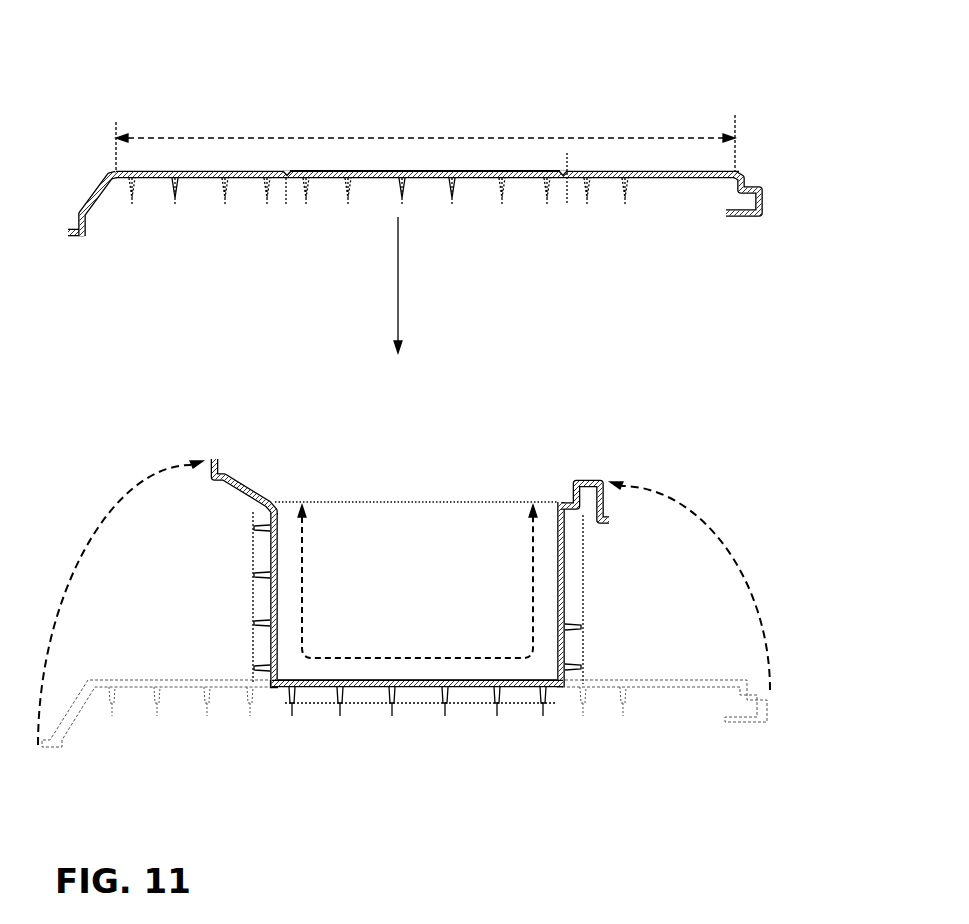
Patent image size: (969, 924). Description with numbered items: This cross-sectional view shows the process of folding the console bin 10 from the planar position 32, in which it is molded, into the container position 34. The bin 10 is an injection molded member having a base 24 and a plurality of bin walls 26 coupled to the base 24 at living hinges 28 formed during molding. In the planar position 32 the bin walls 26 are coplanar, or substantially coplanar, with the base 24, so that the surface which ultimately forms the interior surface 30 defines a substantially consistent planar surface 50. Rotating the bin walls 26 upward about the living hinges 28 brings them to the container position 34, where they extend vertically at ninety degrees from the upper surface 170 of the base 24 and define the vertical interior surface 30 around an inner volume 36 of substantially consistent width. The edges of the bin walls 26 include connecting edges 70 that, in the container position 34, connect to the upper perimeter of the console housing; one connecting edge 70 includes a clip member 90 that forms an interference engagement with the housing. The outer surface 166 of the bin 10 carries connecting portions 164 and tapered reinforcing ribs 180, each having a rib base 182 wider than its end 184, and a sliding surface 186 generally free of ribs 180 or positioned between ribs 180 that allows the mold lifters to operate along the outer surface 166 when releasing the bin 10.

The bin 10 is at (268, 466).
The base 24 is at (318, 171).
The bin walls 26 is at (545, 171).
The living hinges 28 is at (289, 171).
The interior surface 30 is at (277, 518).
The planar position 32 is at (624, 216).
The container position 34 is at (500, 724).
The inner volume 36 is at (491, 525).
The planar surface 50 is at (225, 175).
The connecting edges 70 is at (67, 232).
The clip member 90 is at (750, 216).
The connecting portions 164 is at (87, 207).
The outer surface 166 is at (388, 176).
The upper surface 170 is at (418, 171).
The reinforcing ribs 180 is at (452, 183).
The rib base 182 is at (181, 178).
The end 184 is at (175, 179).
The sliding surface 186 is at (658, 178).